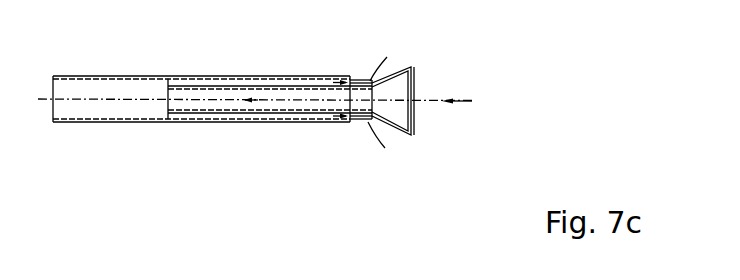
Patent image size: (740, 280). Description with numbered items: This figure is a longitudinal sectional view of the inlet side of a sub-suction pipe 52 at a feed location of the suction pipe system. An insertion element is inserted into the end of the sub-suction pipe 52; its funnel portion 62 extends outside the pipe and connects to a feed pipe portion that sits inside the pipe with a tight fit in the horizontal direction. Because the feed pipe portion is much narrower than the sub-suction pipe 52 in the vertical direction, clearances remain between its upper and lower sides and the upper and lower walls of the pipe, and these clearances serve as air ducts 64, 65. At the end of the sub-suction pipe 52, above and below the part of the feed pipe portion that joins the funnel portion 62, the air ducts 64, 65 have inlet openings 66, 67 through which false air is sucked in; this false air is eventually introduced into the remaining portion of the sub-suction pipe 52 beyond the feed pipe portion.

The sub-suction pipe 52 is at (102, 115).
The funnel portion 62 is at (413, 83).
The air duct 64 is at (198, 81).
The air duct 65 is at (243, 119).
The inlet opening 66 is at (388, 82).
The inlet opening 67 is at (362, 118).